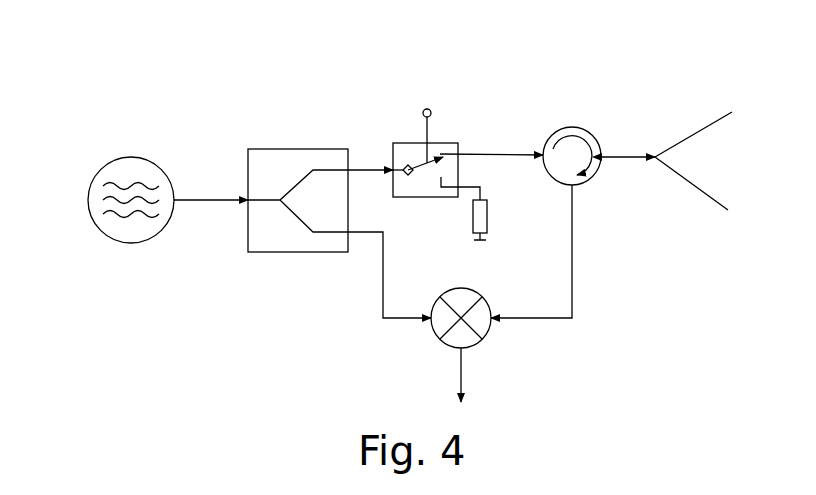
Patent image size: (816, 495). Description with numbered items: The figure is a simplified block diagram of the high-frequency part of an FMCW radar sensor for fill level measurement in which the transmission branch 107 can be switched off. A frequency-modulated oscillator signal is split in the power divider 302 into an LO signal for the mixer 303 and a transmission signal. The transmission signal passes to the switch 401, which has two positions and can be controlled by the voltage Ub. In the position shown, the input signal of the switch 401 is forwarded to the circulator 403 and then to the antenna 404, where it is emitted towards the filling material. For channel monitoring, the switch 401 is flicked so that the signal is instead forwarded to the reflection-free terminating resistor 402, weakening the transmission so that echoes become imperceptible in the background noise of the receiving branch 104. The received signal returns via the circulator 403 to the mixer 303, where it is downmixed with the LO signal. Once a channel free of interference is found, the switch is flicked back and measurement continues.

The transmission branch 107 is at (284, 131).
The power divider 302 is at (267, 243).
The receiving branch 104 is at (350, 274).
The switch 401 is at (398, 143).
The reflection-free terminating resistor 402 is at (487, 213).
The circulator 403 is at (572, 127).
The antenna 404 is at (700, 128).
The mixer 303 is at (467, 338).